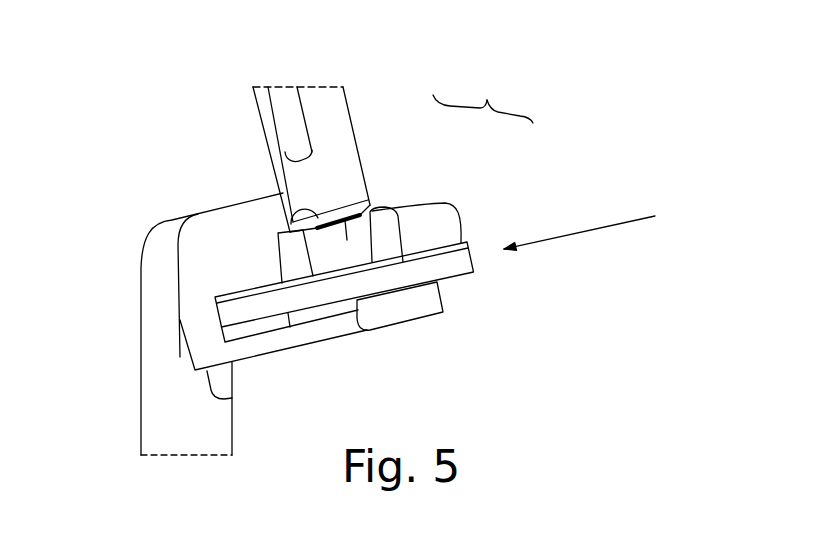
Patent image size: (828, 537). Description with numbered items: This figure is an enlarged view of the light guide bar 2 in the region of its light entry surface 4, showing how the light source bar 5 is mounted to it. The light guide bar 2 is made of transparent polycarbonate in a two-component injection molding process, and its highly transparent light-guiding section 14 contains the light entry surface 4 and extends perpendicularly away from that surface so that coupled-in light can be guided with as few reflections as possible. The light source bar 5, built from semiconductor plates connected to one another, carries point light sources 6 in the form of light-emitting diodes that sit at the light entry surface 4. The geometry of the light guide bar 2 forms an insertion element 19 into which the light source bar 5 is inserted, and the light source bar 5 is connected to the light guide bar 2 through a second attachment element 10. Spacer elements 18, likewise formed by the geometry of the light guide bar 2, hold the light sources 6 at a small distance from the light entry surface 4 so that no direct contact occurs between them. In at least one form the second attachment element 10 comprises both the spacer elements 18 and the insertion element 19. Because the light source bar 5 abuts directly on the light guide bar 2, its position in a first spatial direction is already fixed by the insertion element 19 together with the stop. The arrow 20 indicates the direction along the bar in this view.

The light guide bar 2 is at (232, 254).
The light entry surface 4 is at (317, 217).
The light source bar 5 is at (475, 260).
The point light sources 6 is at (347, 222).
The second attachment element 10 is at (483, 94).
The light-guiding section 14 is at (296, 122).
The spacer elements 18 is at (437, 228).
The insertion element 19 is at (356, 300).
The insertion direction 20 is at (622, 222).